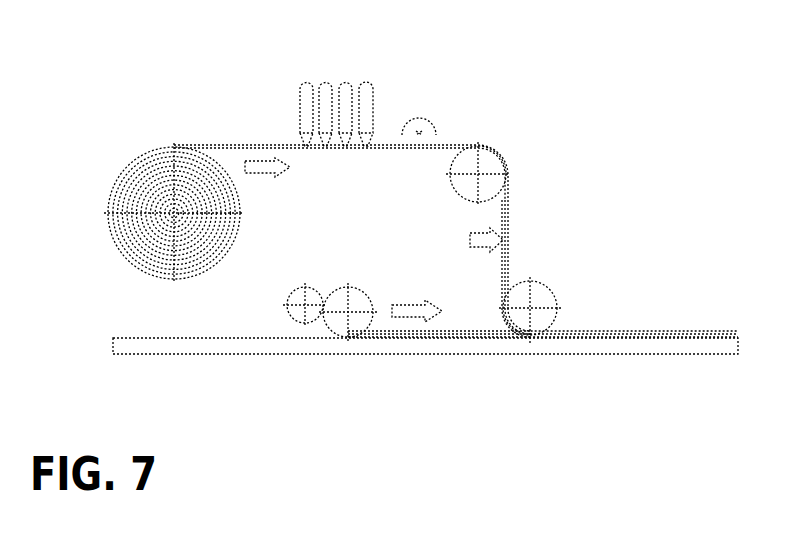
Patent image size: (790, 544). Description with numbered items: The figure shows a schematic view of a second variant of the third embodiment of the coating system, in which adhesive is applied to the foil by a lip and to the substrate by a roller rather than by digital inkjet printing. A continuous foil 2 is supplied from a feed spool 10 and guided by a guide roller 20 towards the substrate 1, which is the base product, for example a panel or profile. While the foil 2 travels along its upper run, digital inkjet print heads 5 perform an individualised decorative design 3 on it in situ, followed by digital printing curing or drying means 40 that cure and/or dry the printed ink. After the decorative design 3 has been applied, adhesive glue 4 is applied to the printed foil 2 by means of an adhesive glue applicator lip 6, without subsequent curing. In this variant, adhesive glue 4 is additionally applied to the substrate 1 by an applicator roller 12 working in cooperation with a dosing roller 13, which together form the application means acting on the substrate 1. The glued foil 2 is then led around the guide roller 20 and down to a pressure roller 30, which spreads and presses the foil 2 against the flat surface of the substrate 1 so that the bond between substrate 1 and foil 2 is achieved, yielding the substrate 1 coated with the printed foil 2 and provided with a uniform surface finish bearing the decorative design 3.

The substrate 1 is at (637, 345).
The foil 2 is at (233, 148).
The decorative design 3 is at (450, 143).
The adhesive glue 4 is at (500, 263).
The digital inkjet print head 5 is at (303, 95).
The adhesive glue applicator lip 6 is at (470, 238).
The feed spool 10 is at (133, 175).
The applicator roller 12 is at (358, 302).
The dosing roller 13 is at (297, 295).
The guide roller 20 is at (460, 183).
The pressure roller 30 is at (538, 298).
The digital printing curing or drying means 40 is at (421, 115).